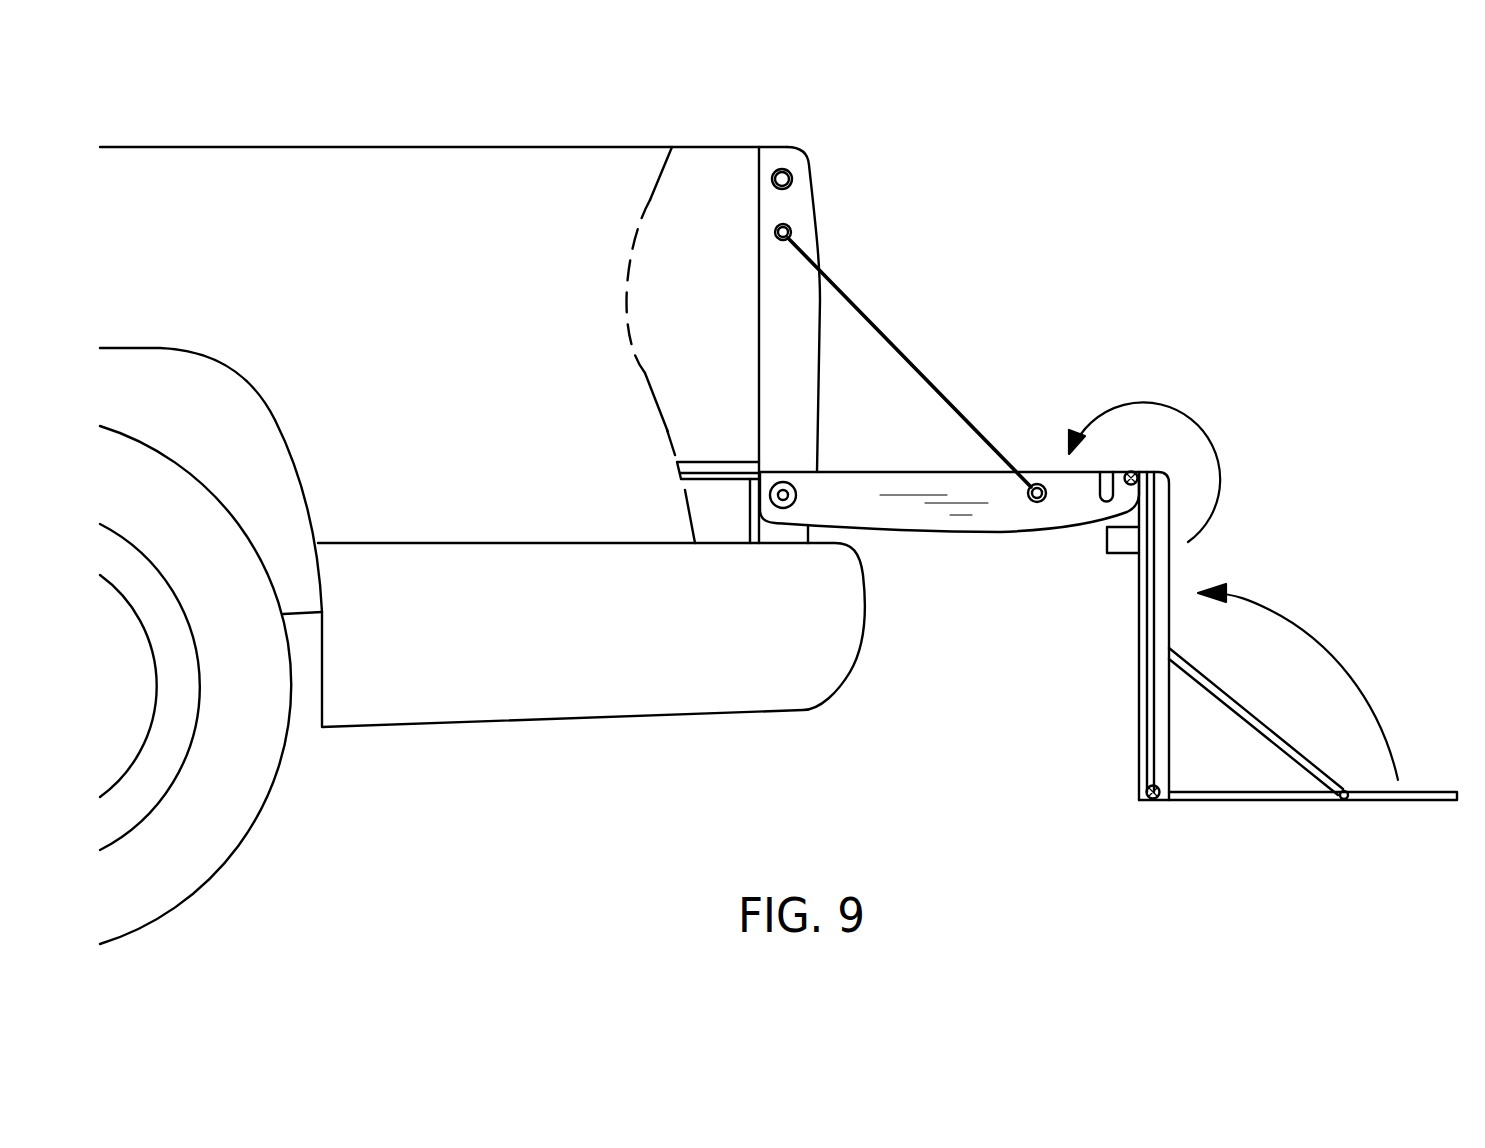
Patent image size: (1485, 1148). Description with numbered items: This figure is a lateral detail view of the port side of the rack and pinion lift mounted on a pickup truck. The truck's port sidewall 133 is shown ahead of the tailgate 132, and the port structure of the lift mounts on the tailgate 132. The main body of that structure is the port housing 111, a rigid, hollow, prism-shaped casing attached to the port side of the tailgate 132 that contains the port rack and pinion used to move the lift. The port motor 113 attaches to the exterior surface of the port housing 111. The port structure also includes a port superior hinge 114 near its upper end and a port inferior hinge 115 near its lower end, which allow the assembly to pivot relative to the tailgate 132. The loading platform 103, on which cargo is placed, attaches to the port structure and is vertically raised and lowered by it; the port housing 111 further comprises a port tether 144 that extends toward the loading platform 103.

The port sidewall 133 is at (690, 183).
The tailgate 132 is at (942, 512).
The port superior hinge 114 is at (1132, 472).
The port motor 113 is at (1107, 543).
The port housing 111 is at (1140, 674).
The port inferior hinge 115 is at (1153, 800).
The loading platform 103 is at (1413, 792).
The port tether 144 is at (1265, 722).